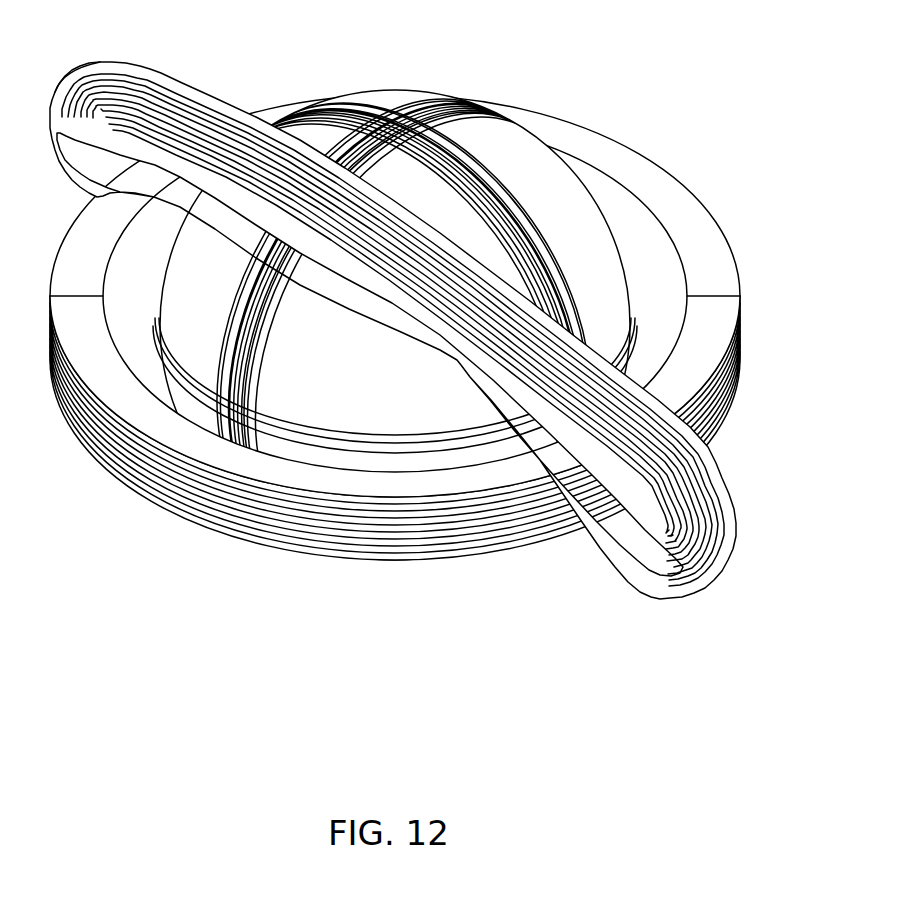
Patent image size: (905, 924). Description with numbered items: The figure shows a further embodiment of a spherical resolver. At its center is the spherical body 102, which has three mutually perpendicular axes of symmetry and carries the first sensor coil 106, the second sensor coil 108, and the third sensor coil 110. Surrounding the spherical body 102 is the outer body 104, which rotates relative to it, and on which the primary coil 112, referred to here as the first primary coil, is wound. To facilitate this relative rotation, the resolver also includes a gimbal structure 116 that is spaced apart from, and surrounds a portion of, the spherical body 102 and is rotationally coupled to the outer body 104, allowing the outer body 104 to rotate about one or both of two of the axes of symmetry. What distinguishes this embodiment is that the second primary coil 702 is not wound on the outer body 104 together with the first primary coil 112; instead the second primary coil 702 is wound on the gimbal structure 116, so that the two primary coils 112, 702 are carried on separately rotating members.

The spherical body 102 is at (537, 128).
The outer body 104 is at (130, 70).
The first sensor coil 106 is at (437, 433).
The second sensor coil 108 is at (305, 108).
The third sensor coil 110 is at (262, 356).
The primary coil 112 is at (63, 93).
The gimbal structure 116 is at (697, 210).
The second primary coil 702 is at (722, 393).